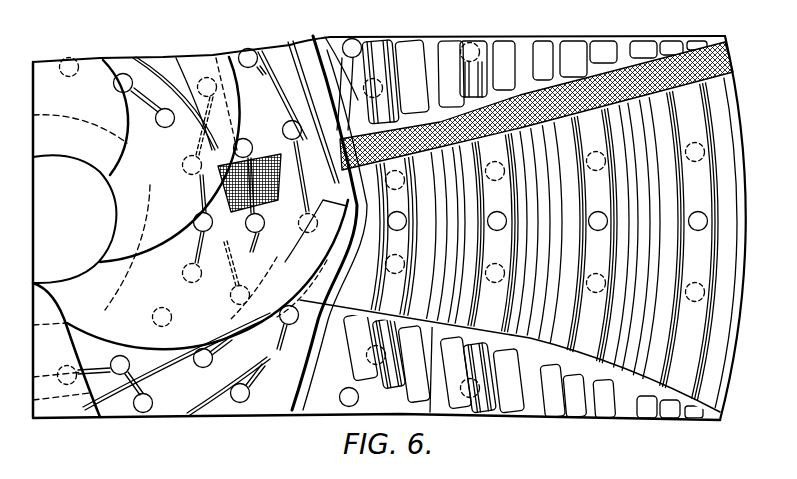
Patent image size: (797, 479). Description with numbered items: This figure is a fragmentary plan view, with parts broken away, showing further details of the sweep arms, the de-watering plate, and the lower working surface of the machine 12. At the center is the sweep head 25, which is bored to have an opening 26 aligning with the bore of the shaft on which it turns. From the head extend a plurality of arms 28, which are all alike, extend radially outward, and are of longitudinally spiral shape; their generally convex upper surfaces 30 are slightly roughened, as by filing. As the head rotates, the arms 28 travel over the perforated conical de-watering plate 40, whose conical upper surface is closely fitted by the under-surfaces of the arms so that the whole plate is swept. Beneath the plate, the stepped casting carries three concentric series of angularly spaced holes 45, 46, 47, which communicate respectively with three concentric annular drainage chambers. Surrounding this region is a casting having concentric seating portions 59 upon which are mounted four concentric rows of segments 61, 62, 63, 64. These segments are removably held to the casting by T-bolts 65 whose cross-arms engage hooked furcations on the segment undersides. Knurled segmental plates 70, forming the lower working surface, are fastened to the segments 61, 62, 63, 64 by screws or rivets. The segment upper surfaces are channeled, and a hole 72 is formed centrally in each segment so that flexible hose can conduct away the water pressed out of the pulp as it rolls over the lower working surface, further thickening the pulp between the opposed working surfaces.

The connecting rods 12 is at (261, 244).
The sweep head 25 is at (100, 174).
The opening 26 is at (55, 260).
The arms 28 is at (177, 223).
The convex upper surfaces 30 is at (314, 252).
The de-watering plate 40 is at (276, 177).
The holes 45 is at (120, 375).
The holes 46 is at (150, 410).
The holes 47 is at (244, 403).
The seating portions 59 is at (651, 270).
The segments 61 is at (352, 108).
The segments 62 is at (490, 400).
The segments 63 is at (594, 403).
The segments 64 is at (713, 357).
The T-bolts 65 is at (692, 287).
The knurled segmental plates 70 is at (727, 56).
The hole 72 is at (406, 222).